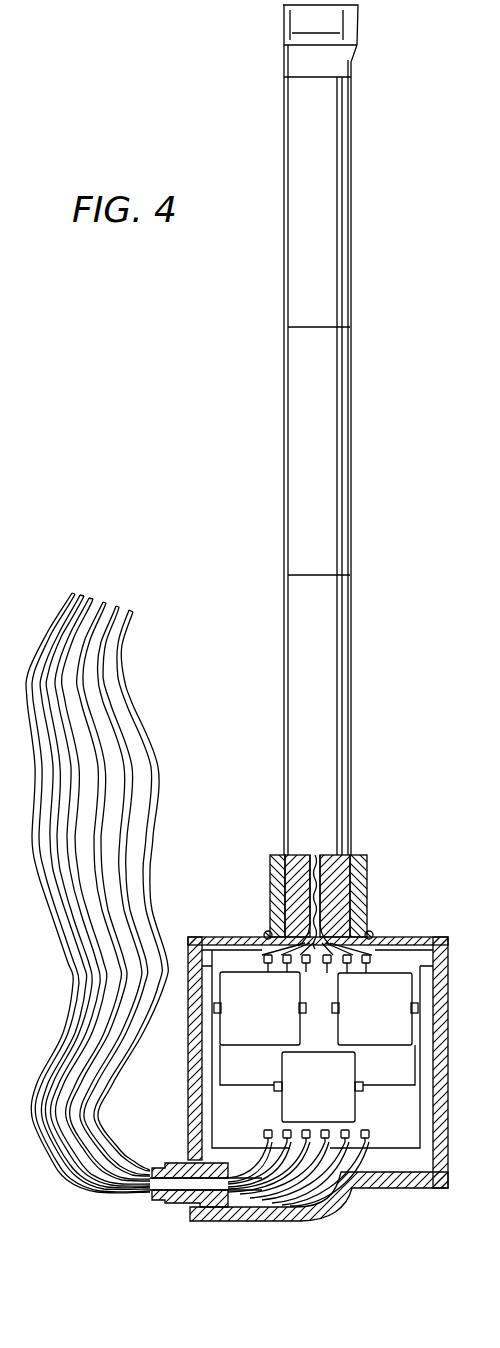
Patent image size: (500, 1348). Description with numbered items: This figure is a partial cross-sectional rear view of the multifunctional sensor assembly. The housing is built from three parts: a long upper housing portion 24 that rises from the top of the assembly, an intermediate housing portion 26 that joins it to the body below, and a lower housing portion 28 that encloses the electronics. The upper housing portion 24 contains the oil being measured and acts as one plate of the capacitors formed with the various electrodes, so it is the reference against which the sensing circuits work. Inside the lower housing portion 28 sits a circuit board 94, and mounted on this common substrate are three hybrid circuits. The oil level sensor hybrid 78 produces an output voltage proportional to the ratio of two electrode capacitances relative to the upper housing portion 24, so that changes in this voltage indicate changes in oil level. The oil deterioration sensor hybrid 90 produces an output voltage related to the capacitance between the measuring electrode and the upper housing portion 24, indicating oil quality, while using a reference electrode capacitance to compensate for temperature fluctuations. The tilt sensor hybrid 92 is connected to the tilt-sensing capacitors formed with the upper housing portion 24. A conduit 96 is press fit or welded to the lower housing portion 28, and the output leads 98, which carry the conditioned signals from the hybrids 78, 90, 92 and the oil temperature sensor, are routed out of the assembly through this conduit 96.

The upper housing portion 24 is at (288, 280).
The intermediate housing portion 26 is at (268, 868).
The lower housing portion 28 is at (252, 1222).
The oil level sensor hybrid 78 is at (392, 992).
The oil deterioration sensor hybrid 90 is at (240, 990).
The tilt sensor hybrid 92 is at (335, 1097).
The circuit board 94 is at (245, 1112).
The conduit 96 is at (160, 1207).
The output leads 98 is at (65, 1162).